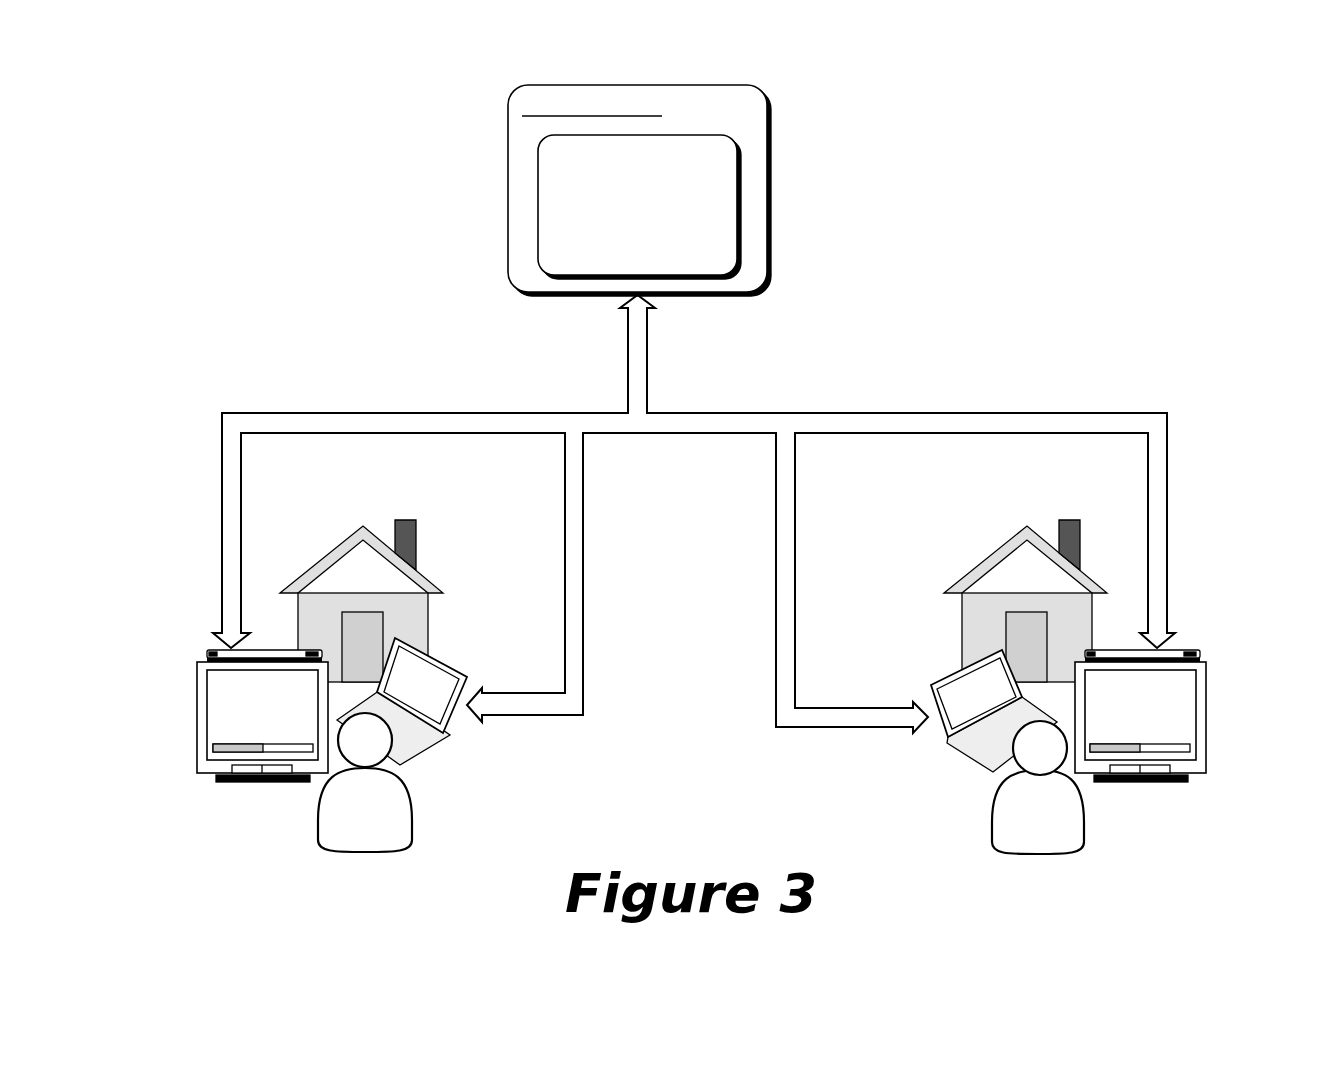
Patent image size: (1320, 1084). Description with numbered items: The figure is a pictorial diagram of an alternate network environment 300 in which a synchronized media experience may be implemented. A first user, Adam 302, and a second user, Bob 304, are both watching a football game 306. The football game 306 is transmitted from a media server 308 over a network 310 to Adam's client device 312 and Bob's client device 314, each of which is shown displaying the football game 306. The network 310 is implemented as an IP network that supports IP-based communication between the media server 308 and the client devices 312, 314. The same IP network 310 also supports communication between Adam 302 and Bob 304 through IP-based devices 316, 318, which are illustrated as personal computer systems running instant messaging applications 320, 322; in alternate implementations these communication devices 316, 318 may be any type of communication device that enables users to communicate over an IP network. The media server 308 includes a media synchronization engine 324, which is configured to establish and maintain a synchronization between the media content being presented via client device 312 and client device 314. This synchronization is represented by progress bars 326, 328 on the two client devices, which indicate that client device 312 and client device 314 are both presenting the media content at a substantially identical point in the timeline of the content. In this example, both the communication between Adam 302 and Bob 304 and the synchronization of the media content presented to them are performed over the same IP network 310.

The network environment 300 is at (1095, 158).
The first user 302 is at (378, 850).
The second user 304 is at (1055, 855).
The football game 306 is at (223, 717).
The media server 308 is at (717, 116).
The network 310 is at (613, 435).
The client device 312 is at (210, 650).
The client device 314 is at (1197, 650).
The IP-based device 316 is at (440, 747).
The IP-based device 318 is at (960, 750).
The instant messaging application 320 is at (445, 680).
The instant messaging application 322 is at (957, 692).
The media synchronization engine 324 is at (620, 268).
The progress bar 326 is at (223, 743).
The progress bar 328 is at (1180, 743).